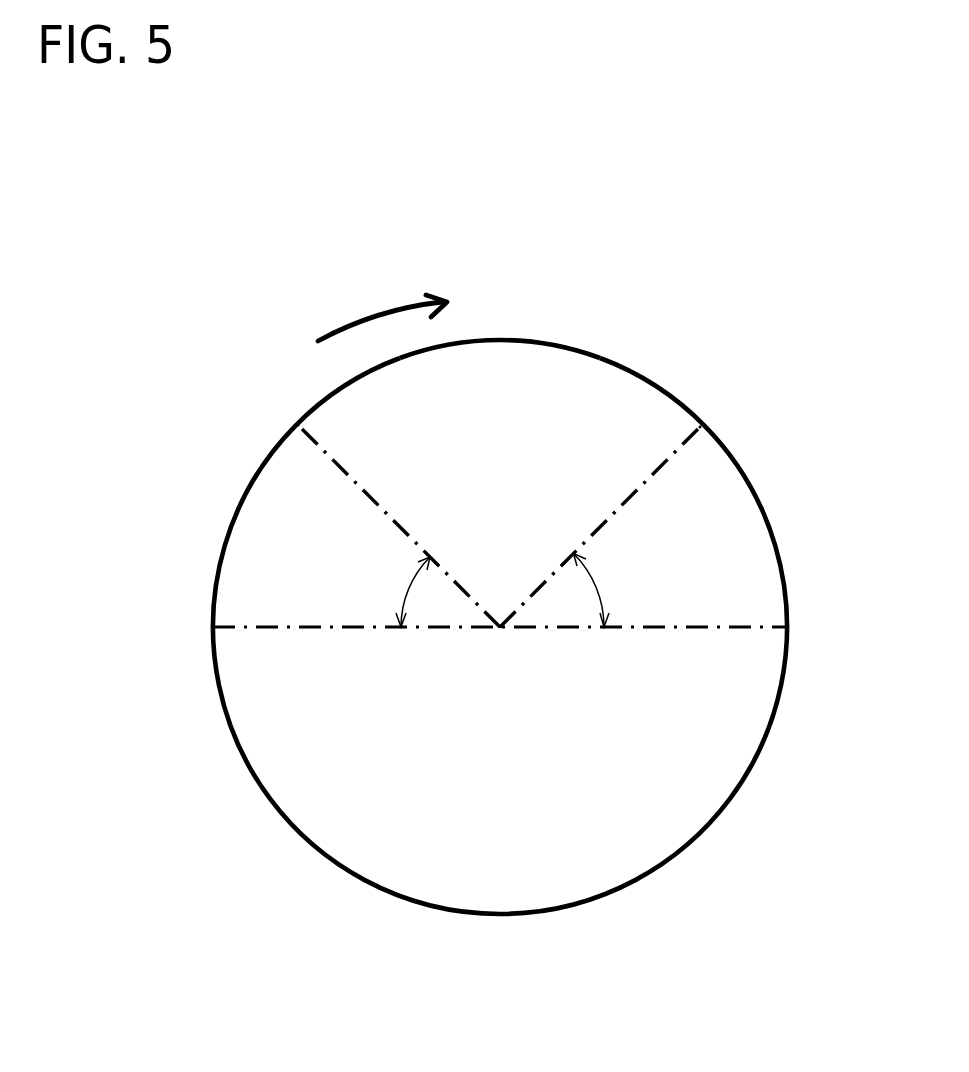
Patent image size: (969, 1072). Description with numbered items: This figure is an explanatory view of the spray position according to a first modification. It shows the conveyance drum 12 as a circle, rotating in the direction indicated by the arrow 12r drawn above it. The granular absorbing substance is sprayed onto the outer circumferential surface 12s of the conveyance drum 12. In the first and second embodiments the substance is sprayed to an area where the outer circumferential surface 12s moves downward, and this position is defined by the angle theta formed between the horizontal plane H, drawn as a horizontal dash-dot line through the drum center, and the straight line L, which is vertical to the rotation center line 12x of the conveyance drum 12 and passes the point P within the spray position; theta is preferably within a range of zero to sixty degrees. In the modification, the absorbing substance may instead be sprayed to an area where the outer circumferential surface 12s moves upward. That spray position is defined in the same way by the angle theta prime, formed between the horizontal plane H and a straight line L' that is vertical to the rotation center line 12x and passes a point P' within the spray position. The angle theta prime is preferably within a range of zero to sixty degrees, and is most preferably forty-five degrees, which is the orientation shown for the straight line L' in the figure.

The conveyance drum 12 is at (708, 785).
The outer circumferential surface 12s is at (597, 353).
The arrow 12r is at (360, 320).
The rotation center line 12x is at (500, 628).
The horizontal plane H is at (448, 628).
The straight line L is at (600, 527).
The straight line L' is at (399, 526).
The point P is at (719, 411).
The point P' is at (279, 410).